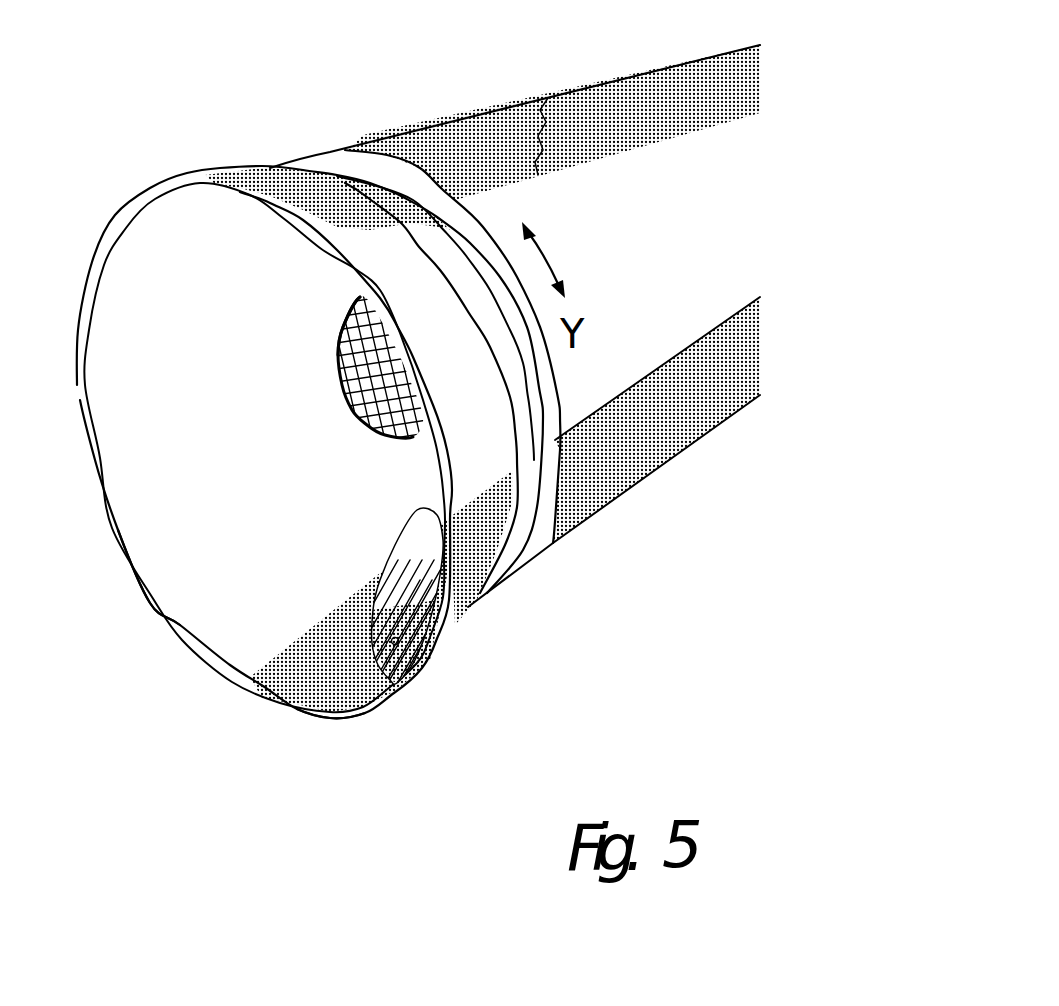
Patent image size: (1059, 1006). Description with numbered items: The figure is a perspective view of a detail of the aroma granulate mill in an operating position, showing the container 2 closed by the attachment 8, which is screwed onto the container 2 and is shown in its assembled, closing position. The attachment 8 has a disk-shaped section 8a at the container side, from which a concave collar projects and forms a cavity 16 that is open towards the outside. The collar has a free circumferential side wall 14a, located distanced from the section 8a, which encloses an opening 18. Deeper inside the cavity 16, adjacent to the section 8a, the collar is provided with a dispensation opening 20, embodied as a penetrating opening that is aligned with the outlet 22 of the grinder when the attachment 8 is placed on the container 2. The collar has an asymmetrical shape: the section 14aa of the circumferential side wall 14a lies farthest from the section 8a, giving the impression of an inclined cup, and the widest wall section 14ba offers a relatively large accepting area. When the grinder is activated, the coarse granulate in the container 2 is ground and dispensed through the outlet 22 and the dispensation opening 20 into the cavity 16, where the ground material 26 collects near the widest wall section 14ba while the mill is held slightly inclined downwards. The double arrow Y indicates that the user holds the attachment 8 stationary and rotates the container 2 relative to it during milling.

The container 2 is at (660, 229).
The attachment 8 is at (505, 610).
The disk-shaped section at the container side 8a is at (520, 512).
The circumferential side wall 14a is at (102, 529).
The section of the circumferential side wall located farthest away 14aa is at (318, 719).
The widest wall section 14ba is at (367, 573).
The cavity 16 is at (258, 467).
The opening 18 is at (145, 609).
The dispensation opening 20 is at (342, 296).
The outlet of the grinder 22 is at (343, 322).
The ground material 26 is at (398, 643).